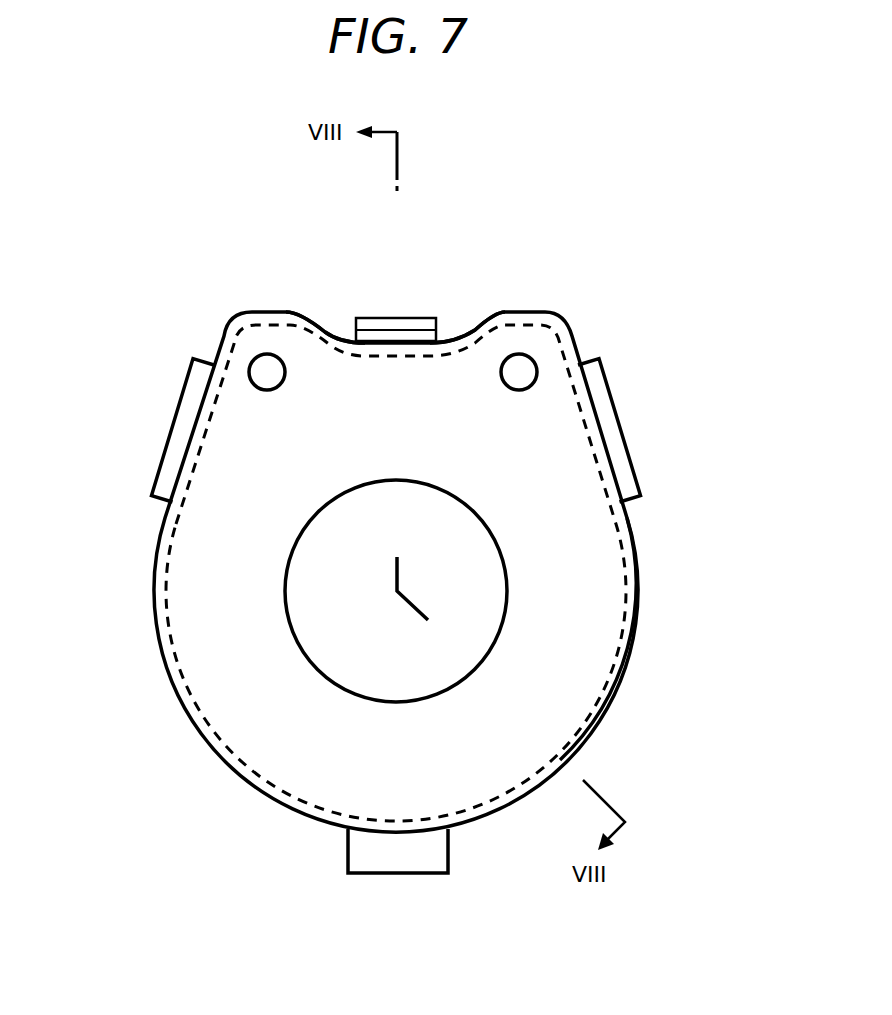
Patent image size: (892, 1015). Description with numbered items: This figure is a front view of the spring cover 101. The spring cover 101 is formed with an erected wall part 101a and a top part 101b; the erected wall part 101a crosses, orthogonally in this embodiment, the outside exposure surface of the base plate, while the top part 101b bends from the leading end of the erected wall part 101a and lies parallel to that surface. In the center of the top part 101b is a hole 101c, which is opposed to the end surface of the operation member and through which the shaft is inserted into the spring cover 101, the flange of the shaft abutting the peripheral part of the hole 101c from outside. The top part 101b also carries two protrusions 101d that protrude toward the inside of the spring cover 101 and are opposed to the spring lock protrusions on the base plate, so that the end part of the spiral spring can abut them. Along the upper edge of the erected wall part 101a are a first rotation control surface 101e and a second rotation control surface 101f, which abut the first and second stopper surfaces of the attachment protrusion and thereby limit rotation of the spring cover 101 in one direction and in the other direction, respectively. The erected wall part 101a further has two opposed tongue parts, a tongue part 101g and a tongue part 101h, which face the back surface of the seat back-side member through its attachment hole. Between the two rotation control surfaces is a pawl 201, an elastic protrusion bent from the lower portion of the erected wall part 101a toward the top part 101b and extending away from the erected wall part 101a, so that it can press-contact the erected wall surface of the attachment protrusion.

The spring cover 101 is at (580, 262).
The erected wall part 101a is at (630, 658).
The top part 101b is at (590, 612).
The hole 101c is at (508, 571).
The protrusions 101d is at (250, 375).
The first rotation control surface 101e is at (313, 330).
The second rotation control surface 101f is at (465, 330).
The tongue part 101g is at (177, 422).
The tongue part 101h is at (438, 856).
The pawl 201 is at (420, 326).